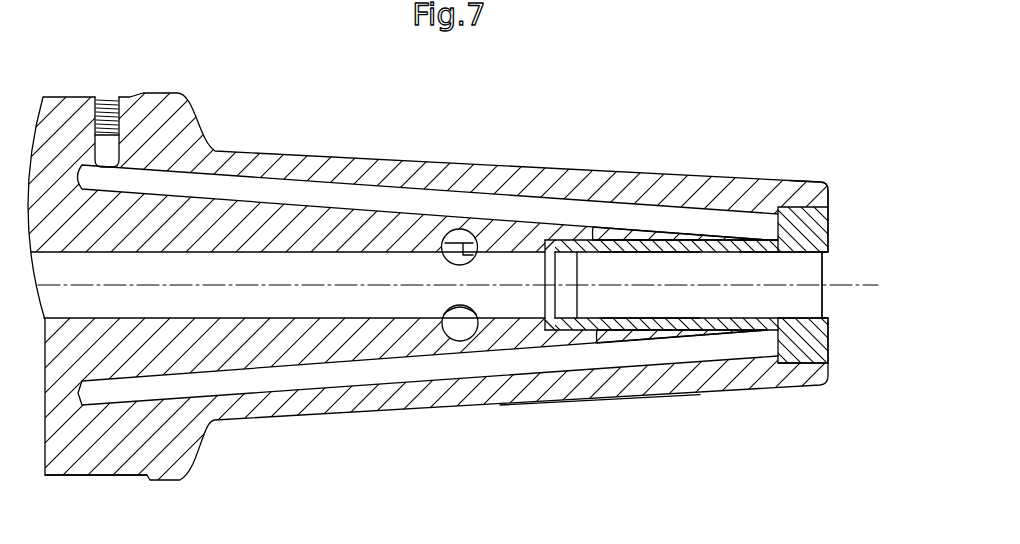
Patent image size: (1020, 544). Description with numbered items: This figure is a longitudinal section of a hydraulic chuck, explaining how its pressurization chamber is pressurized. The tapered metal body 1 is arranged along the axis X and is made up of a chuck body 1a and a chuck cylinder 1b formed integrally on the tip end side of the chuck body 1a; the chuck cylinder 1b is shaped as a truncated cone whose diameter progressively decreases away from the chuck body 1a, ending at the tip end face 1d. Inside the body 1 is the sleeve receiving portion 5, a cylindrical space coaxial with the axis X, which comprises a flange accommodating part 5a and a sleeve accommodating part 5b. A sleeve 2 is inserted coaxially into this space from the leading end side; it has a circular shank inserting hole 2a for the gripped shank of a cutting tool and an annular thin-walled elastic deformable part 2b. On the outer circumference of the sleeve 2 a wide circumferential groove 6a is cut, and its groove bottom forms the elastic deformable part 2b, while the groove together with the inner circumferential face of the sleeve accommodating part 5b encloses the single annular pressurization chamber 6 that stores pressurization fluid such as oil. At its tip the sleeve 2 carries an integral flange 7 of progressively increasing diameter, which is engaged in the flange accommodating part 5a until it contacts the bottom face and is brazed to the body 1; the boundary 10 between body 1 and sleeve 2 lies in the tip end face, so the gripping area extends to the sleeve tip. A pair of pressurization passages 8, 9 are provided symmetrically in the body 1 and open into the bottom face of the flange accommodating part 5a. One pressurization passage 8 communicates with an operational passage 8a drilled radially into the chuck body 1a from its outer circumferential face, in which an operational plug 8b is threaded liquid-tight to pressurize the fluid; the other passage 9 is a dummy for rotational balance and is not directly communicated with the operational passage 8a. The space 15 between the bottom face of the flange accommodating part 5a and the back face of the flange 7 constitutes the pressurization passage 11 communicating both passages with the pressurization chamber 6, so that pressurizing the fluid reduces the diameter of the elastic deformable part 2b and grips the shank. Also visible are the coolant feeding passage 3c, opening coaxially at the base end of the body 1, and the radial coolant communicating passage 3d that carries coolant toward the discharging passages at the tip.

The body 1 is at (291, 153).
The chuck body 1a is at (98, 464).
The chuck cylinder 1b is at (617, 401).
The tip end face 1d is at (833, 186).
The sleeve 2 is at (687, 246).
The shank inserting hole 2a is at (658, 300).
The elastic deformable part 2b is at (762, 256).
The coolant feeding passage 3c is at (289, 302).
The coolant communicating passage 3d is at (460, 236).
The sleeve receiving portion 5 is at (681, 312).
The flange accommodating part 5a is at (812, 352).
The sleeve accommodating part 5b is at (623, 262).
The pressurization chamber 6 is at (597, 334).
The wide circumferential groove 6a is at (558, 348).
The flange 7 is at (795, 343).
The pressurization passage 8 is at (647, 208).
The operational passage 8a is at (105, 150).
The operational plug 8b is at (107, 100).
The pressurization passage 9 is at (356, 375).
The boundary 10 is at (822, 208).
The pressurization passage 11 is at (792, 304).
The space 15 is at (864, 312).
The axis X is at (470, 291).